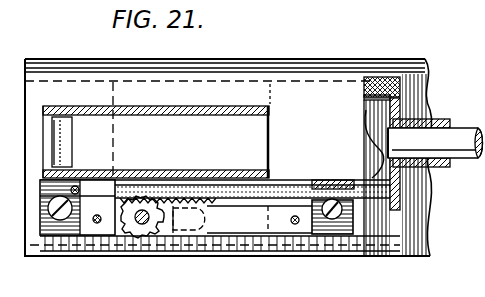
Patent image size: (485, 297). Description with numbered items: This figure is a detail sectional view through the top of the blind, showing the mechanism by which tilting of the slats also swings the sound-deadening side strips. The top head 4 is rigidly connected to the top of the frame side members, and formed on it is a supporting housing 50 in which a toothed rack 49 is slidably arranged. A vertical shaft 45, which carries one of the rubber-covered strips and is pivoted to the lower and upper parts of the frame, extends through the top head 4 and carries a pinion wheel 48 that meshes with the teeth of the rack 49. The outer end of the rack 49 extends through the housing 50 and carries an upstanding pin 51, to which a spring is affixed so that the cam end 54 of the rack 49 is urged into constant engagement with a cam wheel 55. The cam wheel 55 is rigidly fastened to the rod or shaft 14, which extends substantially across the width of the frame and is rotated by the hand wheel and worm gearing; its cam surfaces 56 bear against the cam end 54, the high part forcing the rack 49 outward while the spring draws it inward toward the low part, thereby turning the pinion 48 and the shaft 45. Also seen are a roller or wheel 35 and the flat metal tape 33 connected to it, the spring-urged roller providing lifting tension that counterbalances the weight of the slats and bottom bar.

The head 4 is at (57, 80).
The rod or shaft 14 is at (460, 130).
The flat metal tape 33 is at (70, 152).
The roller or wheel 35 is at (229, 120).
The vertical shaft 45 is at (142, 222).
The pinion wheel 48 is at (154, 238).
The toothed rack 49 is at (288, 190).
The supporting housing 50 is at (330, 228).
The upstanding pin 51 is at (50, 196).
The cam end 54 is at (381, 200).
The cam wheel 55 is at (377, 80).
The cam surfaces 56 is at (376, 162).